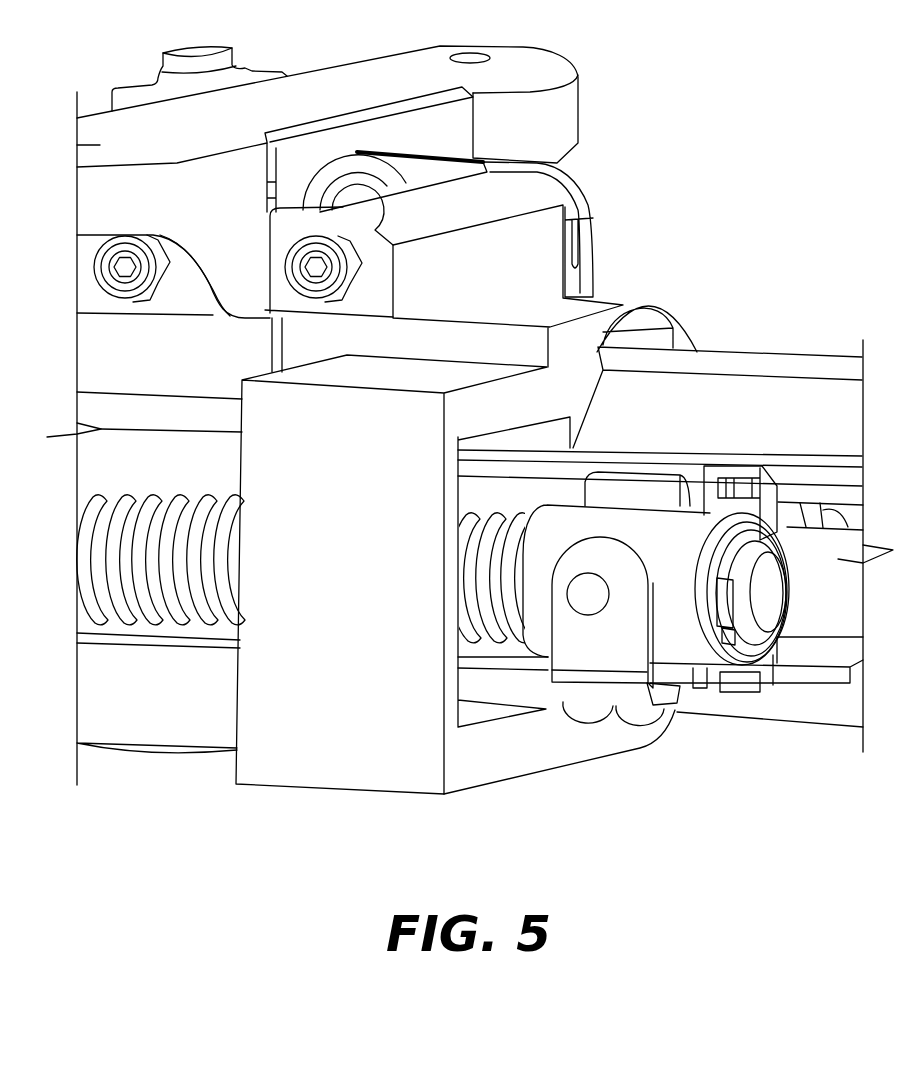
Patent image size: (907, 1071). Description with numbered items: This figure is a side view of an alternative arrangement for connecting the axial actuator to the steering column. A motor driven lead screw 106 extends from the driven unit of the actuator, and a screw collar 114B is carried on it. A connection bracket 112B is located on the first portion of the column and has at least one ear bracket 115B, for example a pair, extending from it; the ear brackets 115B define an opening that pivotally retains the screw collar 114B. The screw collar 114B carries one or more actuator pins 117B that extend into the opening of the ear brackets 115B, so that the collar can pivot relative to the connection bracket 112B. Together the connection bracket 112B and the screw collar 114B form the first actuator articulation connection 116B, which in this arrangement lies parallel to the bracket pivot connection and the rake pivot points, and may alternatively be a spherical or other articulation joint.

The lead screw 106 is at (165, 630).
The screw collar 114B is at (611, 497).
The ear bracket 115B is at (636, 623).
The actuator pin 117B is at (588, 598).
The connection bracket 112B is at (679, 714).
The first actuator articulation connection 116B is at (611, 764).